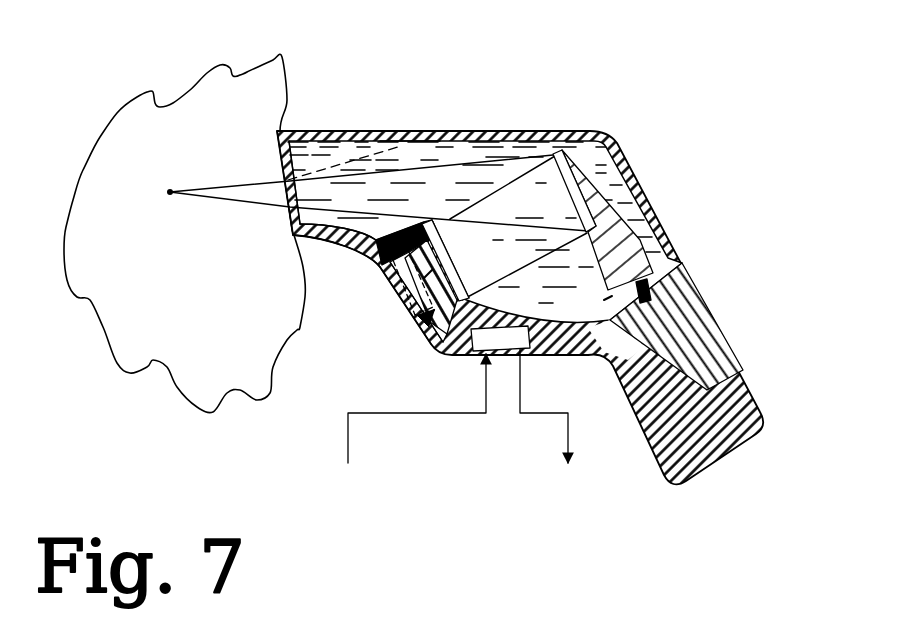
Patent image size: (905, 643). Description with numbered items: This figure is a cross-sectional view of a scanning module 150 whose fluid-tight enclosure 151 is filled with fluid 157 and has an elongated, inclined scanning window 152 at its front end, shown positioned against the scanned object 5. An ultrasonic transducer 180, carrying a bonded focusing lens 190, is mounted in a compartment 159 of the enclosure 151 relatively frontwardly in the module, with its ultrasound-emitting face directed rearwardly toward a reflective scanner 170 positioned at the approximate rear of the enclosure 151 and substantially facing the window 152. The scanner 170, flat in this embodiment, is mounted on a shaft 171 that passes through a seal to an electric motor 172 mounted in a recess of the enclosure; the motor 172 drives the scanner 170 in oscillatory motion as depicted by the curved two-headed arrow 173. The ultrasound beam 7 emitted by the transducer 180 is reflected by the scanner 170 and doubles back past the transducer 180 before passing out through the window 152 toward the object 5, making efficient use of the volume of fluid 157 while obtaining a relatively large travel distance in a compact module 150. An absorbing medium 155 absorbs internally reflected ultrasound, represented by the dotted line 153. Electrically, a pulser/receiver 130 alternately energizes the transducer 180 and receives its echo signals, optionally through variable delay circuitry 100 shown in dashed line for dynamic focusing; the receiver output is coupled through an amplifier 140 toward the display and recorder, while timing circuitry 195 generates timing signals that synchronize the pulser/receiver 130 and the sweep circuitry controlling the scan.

The saw blade workpiece 5 is at (248, 91).
The ultrasound beam 7 is at (224, 199).
The variable delay circuitry 100 is at (392, 263).
The pulser/receiver circuit 130 is at (520, 341).
The amplifier 140 is at (584, 430).
The scanning module 150 is at (398, 336).
The fluid-tight fluid-filled enclosure 151 is at (622, 143).
The scanning window 152 is at (274, 161).
The internally reflected ultrasound 153 is at (347, 163).
The absorbing medium 155 is at (403, 137).
The fluid 157 is at (463, 150).
The compartment 159 is at (376, 261).
The reflective scanner 170 is at (570, 190).
The shaft 171 is at (610, 320).
The electric motor 172 is at (708, 318).
The curved two-headed arrow 173 is at (628, 307).
The ultrasonic transducer 180 is at (439, 240).
The focusing lens 190 is at (459, 272).
The timing circuitry 195 is at (390, 442).